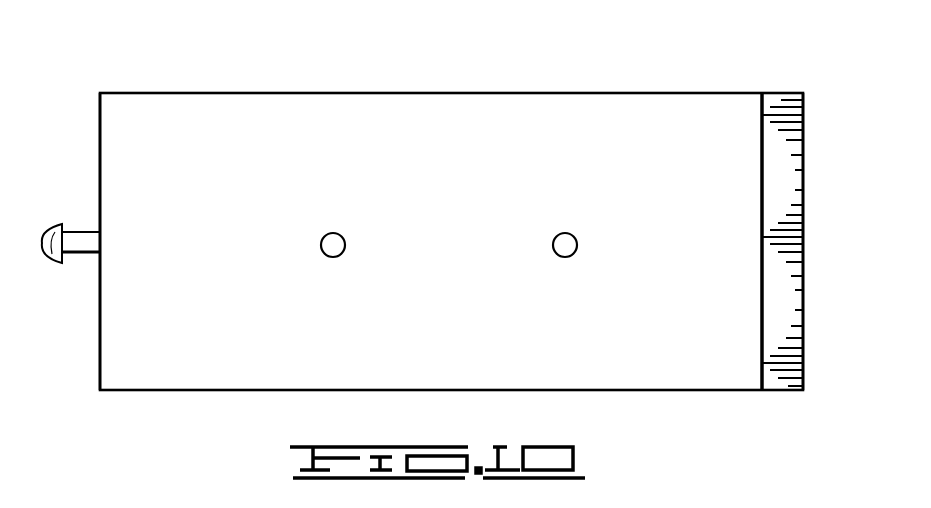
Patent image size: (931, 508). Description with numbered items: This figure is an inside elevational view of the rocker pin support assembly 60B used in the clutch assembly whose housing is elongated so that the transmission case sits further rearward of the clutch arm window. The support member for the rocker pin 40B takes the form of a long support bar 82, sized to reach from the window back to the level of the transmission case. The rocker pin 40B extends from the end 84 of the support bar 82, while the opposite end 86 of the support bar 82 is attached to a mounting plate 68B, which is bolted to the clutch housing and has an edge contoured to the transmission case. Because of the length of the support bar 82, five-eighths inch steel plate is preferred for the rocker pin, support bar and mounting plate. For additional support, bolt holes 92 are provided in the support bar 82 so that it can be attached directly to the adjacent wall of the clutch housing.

The rocker pin support assembly 60B is at (641, 80).
The support bar 82 is at (455, 106).
The end of the support bar 84 is at (100, 141).
The opposite end of the support bar 86 is at (727, 113).
The mounting plate 68B is at (786, 314).
The bolt holes 92 is at (333, 240).
The rocker pin 40B is at (87, 262).